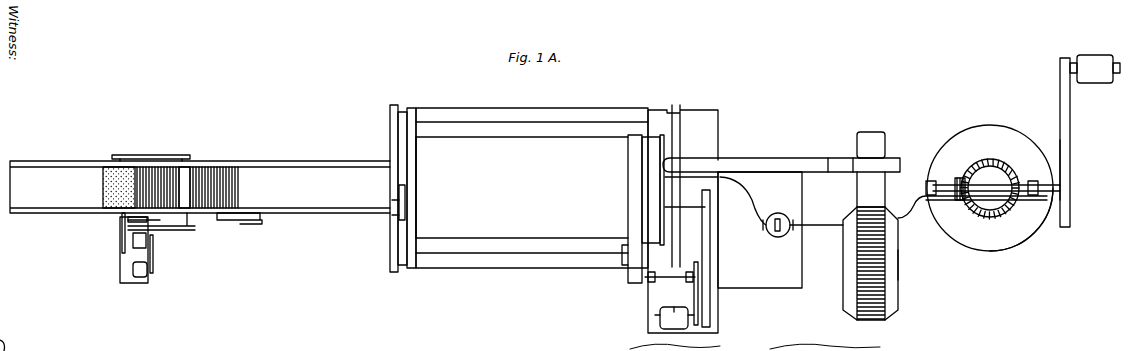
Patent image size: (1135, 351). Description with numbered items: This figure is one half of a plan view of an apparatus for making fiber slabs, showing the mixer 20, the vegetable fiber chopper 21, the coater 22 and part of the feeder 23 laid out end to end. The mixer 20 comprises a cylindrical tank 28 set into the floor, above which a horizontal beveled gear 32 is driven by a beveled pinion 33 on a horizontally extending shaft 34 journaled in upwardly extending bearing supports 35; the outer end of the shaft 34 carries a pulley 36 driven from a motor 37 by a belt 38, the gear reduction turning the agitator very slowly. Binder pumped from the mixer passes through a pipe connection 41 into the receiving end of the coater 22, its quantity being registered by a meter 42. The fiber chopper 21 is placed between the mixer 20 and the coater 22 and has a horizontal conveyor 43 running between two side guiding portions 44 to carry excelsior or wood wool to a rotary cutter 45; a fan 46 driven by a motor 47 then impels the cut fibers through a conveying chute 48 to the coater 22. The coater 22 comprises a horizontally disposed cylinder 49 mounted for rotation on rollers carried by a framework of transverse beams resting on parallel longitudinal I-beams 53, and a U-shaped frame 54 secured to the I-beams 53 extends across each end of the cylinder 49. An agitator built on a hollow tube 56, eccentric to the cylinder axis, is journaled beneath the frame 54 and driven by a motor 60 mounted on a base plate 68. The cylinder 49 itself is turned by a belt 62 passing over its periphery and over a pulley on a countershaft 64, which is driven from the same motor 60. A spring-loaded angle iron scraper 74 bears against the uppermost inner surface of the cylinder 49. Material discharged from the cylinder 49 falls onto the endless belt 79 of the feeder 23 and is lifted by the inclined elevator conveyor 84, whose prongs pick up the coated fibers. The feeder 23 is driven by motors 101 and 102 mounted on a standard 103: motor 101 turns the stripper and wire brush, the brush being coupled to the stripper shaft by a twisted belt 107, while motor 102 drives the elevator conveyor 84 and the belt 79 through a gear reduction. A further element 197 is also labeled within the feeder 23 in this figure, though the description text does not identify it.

The mixer 20 is at (995, 125).
The vegetable fiber chopper 21 is at (900, 258).
The coater 22 is at (562, 137).
The feeder 23 is at (228, 160).
The cylindrical tank 28 is at (1005, 240).
The beveled gear 32 is at (975, 162).
The beveled pinion 33 is at (958, 178).
The horizontally extending shaft 34 is at (991, 186).
The bearing supports 35 is at (930, 181).
The pulley 36 is at (1068, 170).
The motor 37 is at (1097, 76).
The belt 38 is at (1068, 136).
The pipe connection 41 is at (750, 212).
The meter 42 is at (186, 200).
The horizontal conveyor 43 is at (878, 298).
The side guiding portions 44 is at (848, 253).
The rotary cutter 45 is at (866, 184).
The fan 46 is at (840, 160).
The motor 47 is at (870, 140).
The conveying chute 48 is at (752, 160).
The cylinder 49 is at (460, 187).
The I-beams 53 is at (505, 122).
The frame 54 is at (390, 241).
The hollow rod or tube 56 is at (705, 208).
The motor 60 is at (674, 307).
The belt 62 is at (628, 219).
The countershaft 64 is at (660, 282).
The base plate 68 is at (705, 136).
The angle iron scraper 74 is at (405, 190).
The endless conveyor or belt 79 is at (300, 197).
The elevator conveyor 84 is at (209, 200).
The motor 101 is at (132, 240).
The motor 102 is at (139, 276).
The standard 103 is at (120, 268).
The belt 107 is at (168, 156).
The block 197 is at (118, 200).